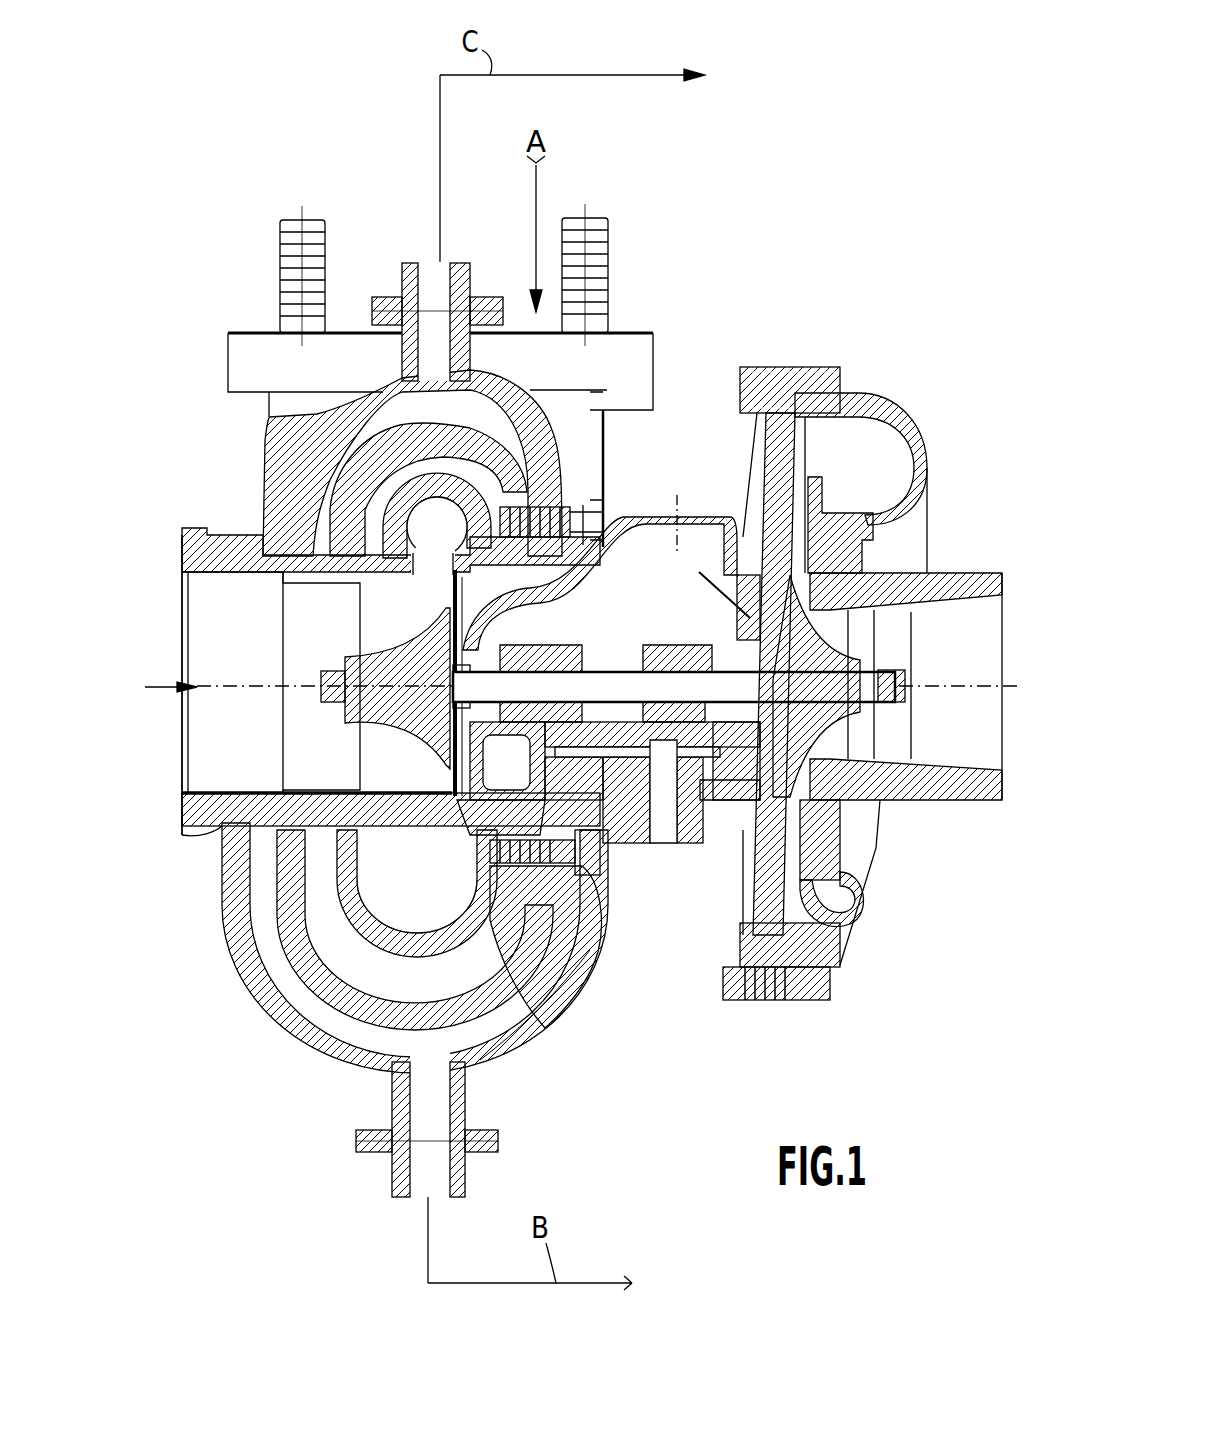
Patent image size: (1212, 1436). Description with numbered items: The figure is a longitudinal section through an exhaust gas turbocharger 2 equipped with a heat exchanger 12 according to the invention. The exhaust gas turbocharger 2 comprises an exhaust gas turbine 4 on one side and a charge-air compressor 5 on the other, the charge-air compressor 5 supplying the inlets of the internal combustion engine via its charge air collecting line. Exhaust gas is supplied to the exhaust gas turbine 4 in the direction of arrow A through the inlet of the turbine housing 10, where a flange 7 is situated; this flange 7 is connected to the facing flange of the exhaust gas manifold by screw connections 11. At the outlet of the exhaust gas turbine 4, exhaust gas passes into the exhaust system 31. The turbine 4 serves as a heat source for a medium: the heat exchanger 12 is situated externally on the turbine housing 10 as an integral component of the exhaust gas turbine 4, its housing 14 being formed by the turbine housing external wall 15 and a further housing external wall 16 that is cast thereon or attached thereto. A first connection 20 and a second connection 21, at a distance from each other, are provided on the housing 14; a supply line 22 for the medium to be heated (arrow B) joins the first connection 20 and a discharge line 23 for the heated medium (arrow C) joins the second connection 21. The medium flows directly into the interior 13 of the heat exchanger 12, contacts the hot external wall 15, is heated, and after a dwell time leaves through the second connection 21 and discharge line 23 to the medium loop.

The exhaust gas turbocharger 2 is at (703, 345).
The exhaust gas turbine 4 is at (412, 923).
The charge-air compressor 5 is at (829, 471).
The flange 7 is at (252, 382).
The turbine housing 10 is at (552, 1001).
The screw connections 11 is at (290, 291).
The heat exchanger 12 is at (262, 1066).
The interior of the heat exchanger 13 is at (322, 1014).
The housing of the heat exchanger 14 is at (512, 1042).
The turbine housing external wall 15 is at (505, 1006).
The further housing external wall 16 is at (500, 1064).
The first connection 20 is at (370, 1106).
The second connection 21 is at (392, 353).
The supply line 22 is at (396, 1177).
The discharge line 23 is at (400, 281).
The exhaust system 31 is at (182, 771).